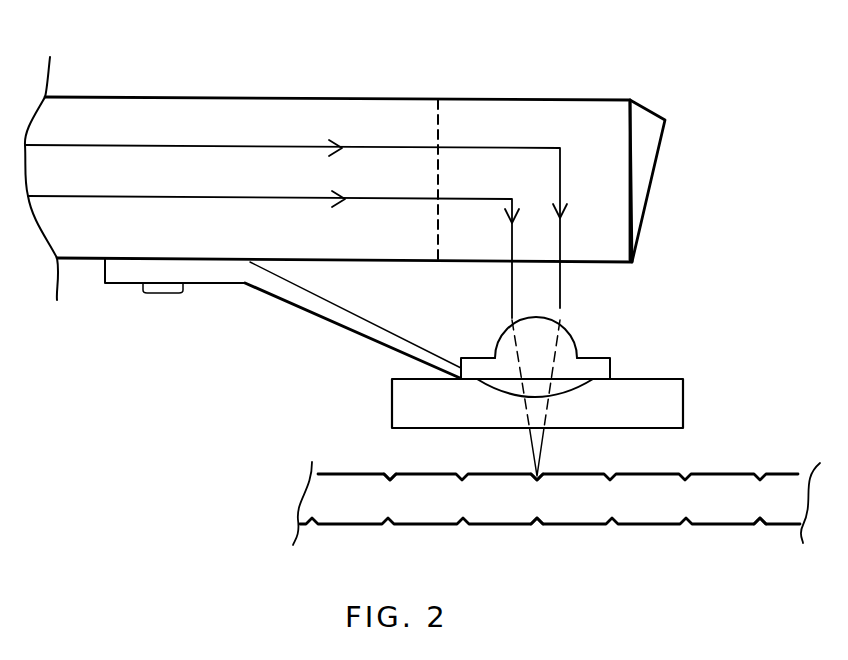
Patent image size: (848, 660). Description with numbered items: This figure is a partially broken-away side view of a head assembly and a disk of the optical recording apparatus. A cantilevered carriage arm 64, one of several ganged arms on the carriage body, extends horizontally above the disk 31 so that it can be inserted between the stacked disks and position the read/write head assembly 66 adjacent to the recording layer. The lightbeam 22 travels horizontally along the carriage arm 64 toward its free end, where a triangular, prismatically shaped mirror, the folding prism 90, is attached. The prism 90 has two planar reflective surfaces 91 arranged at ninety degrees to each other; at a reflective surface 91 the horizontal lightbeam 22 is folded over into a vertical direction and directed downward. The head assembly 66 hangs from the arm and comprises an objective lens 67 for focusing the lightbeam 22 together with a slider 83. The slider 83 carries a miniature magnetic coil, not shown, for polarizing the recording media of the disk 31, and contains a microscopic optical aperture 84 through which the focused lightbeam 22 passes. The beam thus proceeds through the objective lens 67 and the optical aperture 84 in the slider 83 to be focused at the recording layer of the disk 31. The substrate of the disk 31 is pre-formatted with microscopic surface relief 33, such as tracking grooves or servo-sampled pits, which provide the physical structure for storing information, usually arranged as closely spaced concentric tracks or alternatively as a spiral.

The lightbeam 22 is at (150, 196).
The disk 31 is at (720, 473).
The surface relief 33 is at (390, 472).
The carriage arm 64 is at (262, 97).
The head assembly 66 is at (318, 337).
The objective lens 67 is at (570, 335).
The slider 83 is at (685, 395).
The optical aperture 84 is at (544, 430).
The folding prism 90 is at (647, 132).
The reflective surface 91 is at (588, 110).